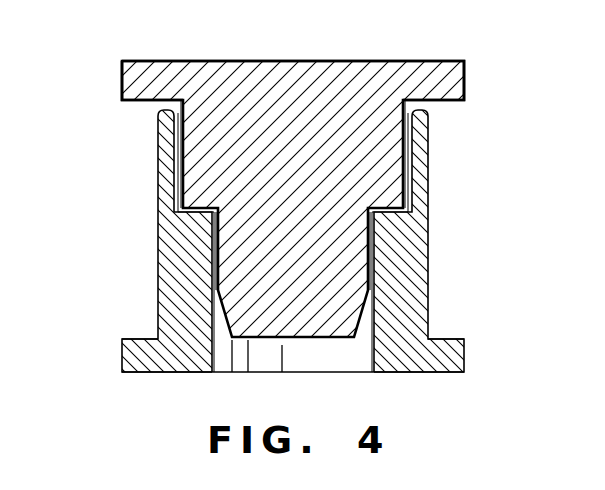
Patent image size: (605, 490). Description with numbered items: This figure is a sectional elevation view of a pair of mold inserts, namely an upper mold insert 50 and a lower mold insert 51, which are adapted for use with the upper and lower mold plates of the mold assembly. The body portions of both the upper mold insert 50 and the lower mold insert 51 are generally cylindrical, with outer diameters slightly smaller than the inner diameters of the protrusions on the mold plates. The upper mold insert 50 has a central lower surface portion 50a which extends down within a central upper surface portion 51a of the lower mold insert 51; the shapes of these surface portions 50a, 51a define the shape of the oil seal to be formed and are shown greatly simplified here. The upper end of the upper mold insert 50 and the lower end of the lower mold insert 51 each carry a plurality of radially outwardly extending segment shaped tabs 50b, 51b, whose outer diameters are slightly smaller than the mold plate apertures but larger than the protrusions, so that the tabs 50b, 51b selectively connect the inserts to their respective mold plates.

The upper mold insert 50 is at (298, 170).
The central lower surface portion 50a is at (210, 278).
The segment shaped tabs 50b is at (122, 79).
The lower mold insert 51 is at (295, 268).
The central upper surface portion 51a is at (368, 284).
The segment shaped tabs 51b is at (133, 355).